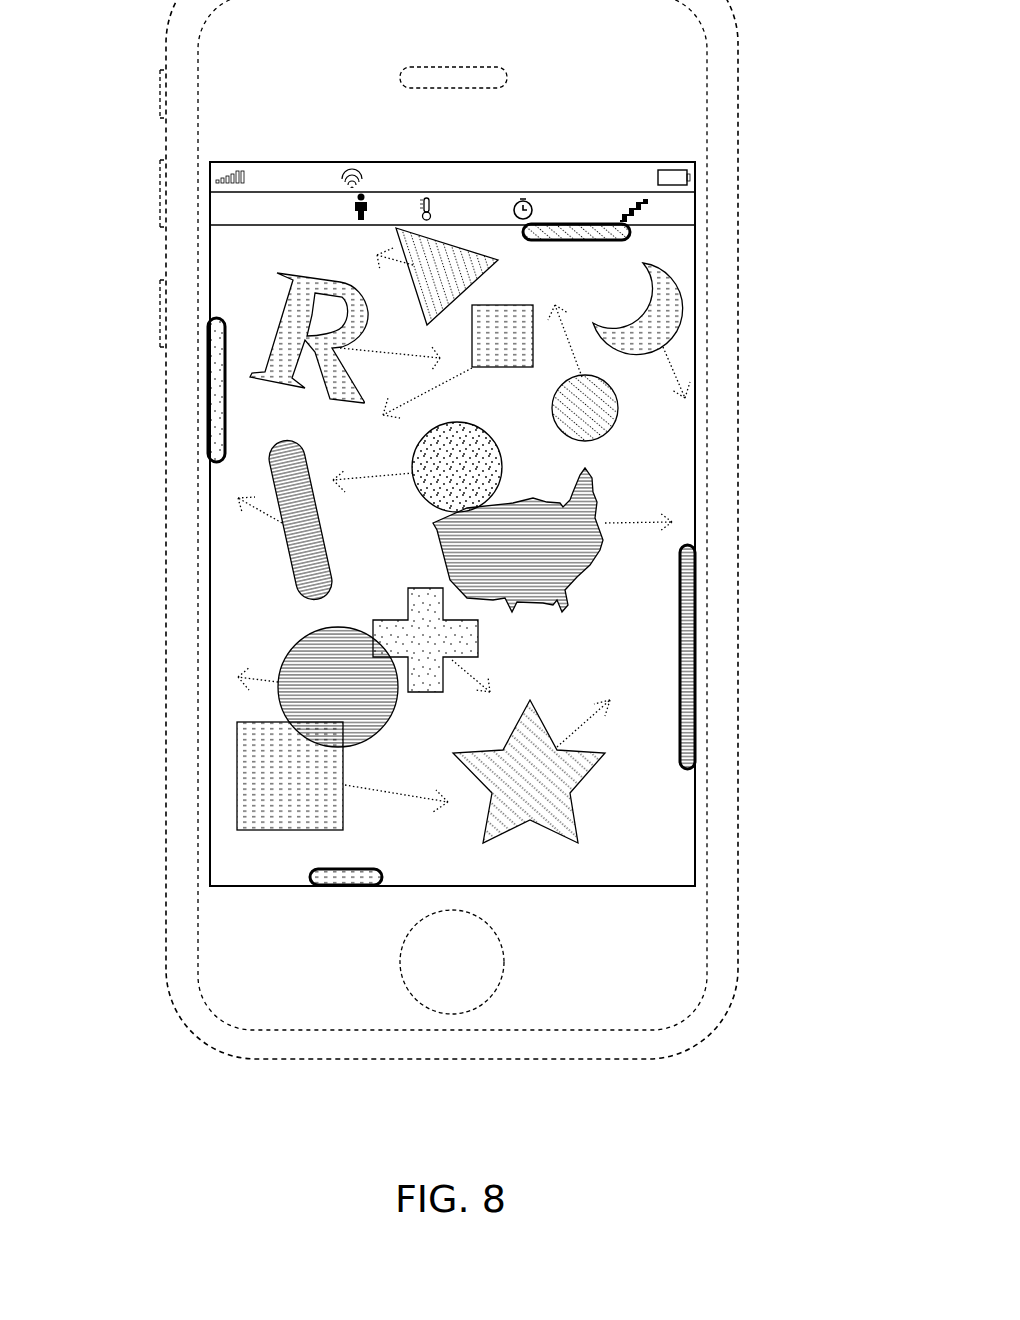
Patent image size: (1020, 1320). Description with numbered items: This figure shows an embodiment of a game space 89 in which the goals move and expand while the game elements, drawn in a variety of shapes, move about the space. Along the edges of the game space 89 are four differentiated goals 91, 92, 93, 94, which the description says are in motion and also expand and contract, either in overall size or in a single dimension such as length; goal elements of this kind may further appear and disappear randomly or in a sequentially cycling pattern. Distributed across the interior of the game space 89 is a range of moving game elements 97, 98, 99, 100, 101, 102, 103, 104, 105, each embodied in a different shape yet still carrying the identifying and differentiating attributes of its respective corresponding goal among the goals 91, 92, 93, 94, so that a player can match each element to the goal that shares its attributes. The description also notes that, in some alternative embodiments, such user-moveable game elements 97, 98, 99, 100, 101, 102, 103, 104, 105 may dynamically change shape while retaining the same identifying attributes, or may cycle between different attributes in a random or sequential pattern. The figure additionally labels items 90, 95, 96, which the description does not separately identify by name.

The game space 89 is at (232, 534).
The side button 90 is at (210, 378).
The goal 91 is at (600, 226).
The goal 92 is at (686, 646).
The goal 93 is at (348, 880).
The goal 94 is at (345, 688).
The dotted circle shape element 95 is at (457, 467).
The hatched circle shape element 96 is at (588, 410).
The moving game element 97 is at (423, 257).
The moving game element 98 is at (295, 312).
The moving game element 99 is at (507, 333).
The moving game element 100 is at (655, 318).
The moving game element 101 is at (300, 523).
The moving game element 102 is at (505, 548).
The moving game element 103 is at (423, 643).
The moving game element 104 is at (288, 777).
The moving game element 105 is at (535, 778).